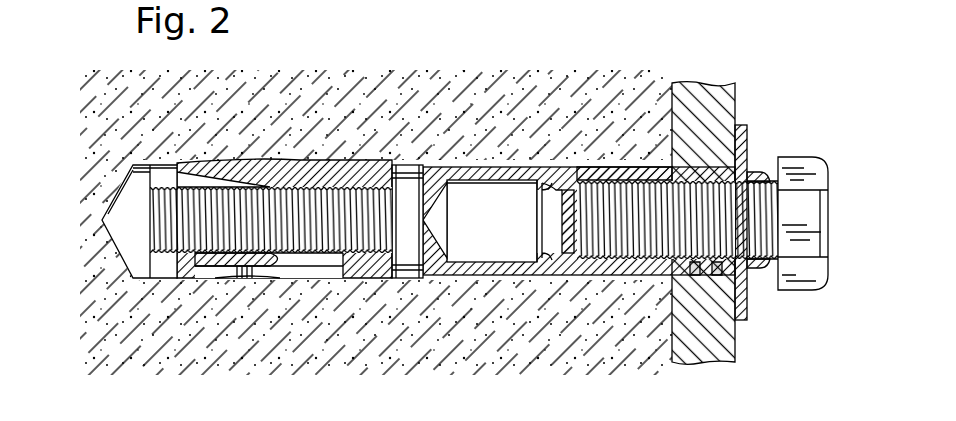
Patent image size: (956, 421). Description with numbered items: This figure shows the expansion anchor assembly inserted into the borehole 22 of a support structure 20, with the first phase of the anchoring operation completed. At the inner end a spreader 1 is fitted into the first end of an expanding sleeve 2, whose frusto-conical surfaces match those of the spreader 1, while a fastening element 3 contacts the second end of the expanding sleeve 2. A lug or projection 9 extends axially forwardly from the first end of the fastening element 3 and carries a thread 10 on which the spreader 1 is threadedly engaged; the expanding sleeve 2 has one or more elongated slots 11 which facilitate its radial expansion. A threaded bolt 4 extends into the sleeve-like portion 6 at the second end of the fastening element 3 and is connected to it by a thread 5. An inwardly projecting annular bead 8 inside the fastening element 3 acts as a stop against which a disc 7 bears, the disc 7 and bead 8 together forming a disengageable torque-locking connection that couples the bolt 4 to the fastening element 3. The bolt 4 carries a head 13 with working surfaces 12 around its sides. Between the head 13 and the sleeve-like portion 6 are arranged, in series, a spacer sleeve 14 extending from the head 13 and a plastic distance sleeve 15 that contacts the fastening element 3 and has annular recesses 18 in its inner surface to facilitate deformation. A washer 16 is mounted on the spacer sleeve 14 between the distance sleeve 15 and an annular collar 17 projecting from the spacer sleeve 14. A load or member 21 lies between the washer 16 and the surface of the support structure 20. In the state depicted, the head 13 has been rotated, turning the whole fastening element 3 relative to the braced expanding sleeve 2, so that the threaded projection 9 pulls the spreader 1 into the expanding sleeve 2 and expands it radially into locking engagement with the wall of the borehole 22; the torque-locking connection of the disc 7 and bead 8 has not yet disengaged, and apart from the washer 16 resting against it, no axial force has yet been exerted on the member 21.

The spreader 1 is at (214, 180).
The expanding sleeve 2 is at (268, 170).
The fastening element 3 is at (430, 285).
The threaded bolt 4 is at (586, 172).
The thread 5 is at (640, 250).
The sleeve-like portion 6 is at (495, 168).
The disc 7 is at (562, 232).
The bead 8 is at (546, 196).
The projection 9 is at (145, 182).
The thread 10 is at (323, 262).
The elongated slots 11 is at (213, 272).
The working surfaces 12 is at (808, 243).
The head 13 is at (800, 150).
The spacer sleeve 14 is at (775, 268).
The distance sleeve 15 is at (707, 172).
The washer 16 is at (749, 140).
The annular collar 17 is at (757, 172).
The annular recesses 18 is at (714, 266).
The support structure 20 is at (176, 348).
The member 21 is at (728, 355).
The borehole 22 is at (148, 270).